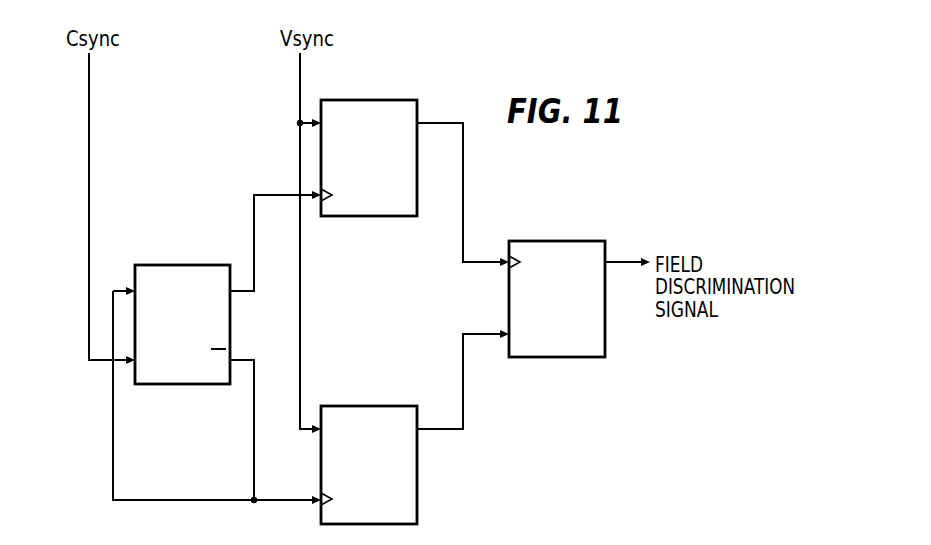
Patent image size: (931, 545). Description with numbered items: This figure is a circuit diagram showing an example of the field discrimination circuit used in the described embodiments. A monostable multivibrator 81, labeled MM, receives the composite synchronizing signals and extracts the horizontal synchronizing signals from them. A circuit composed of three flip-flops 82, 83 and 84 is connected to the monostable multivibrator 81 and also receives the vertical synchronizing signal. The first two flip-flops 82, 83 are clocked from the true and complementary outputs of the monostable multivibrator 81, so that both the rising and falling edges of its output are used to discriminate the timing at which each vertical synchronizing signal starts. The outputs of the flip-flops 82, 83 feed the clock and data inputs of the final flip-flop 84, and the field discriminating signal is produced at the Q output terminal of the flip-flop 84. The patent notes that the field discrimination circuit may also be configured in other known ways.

The monostable multivibrator 81 is at (203, 265).
The flip-flop 82 is at (405, 100).
The flip-flop 83 is at (417, 502).
The flip-flop 84 is at (592, 357).